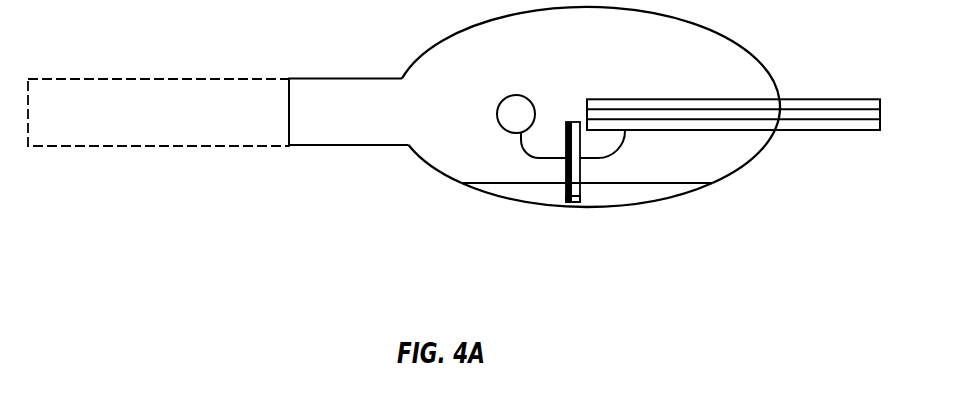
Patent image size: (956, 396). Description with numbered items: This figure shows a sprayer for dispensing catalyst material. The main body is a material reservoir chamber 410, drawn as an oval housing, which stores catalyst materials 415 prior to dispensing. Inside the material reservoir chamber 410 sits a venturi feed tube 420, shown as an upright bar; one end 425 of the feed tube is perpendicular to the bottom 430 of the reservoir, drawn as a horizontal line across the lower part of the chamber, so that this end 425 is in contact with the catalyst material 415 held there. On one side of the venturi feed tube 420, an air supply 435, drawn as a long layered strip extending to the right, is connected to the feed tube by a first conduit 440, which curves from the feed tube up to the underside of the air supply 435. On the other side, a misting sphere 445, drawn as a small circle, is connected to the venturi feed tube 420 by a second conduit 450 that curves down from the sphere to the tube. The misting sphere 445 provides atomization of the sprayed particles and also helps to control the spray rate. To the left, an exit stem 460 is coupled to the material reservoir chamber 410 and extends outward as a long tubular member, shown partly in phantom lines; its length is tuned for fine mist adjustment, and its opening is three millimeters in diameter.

The material reservoir chamber 410 is at (750, 163).
The catalyst materials 415 is at (640, 193).
The venturi feed tube 420 is at (568, 122).
The end of the feed tube 425 is at (568, 203).
The bottom of the reservoir 430 is at (587, 207).
The air supply 435 is at (720, 113).
The first conduit 440 is at (620, 148).
The misting sphere 445 is at (510, 110).
The second conduit 450 is at (521, 152).
The exit stem 460 is at (240, 145).